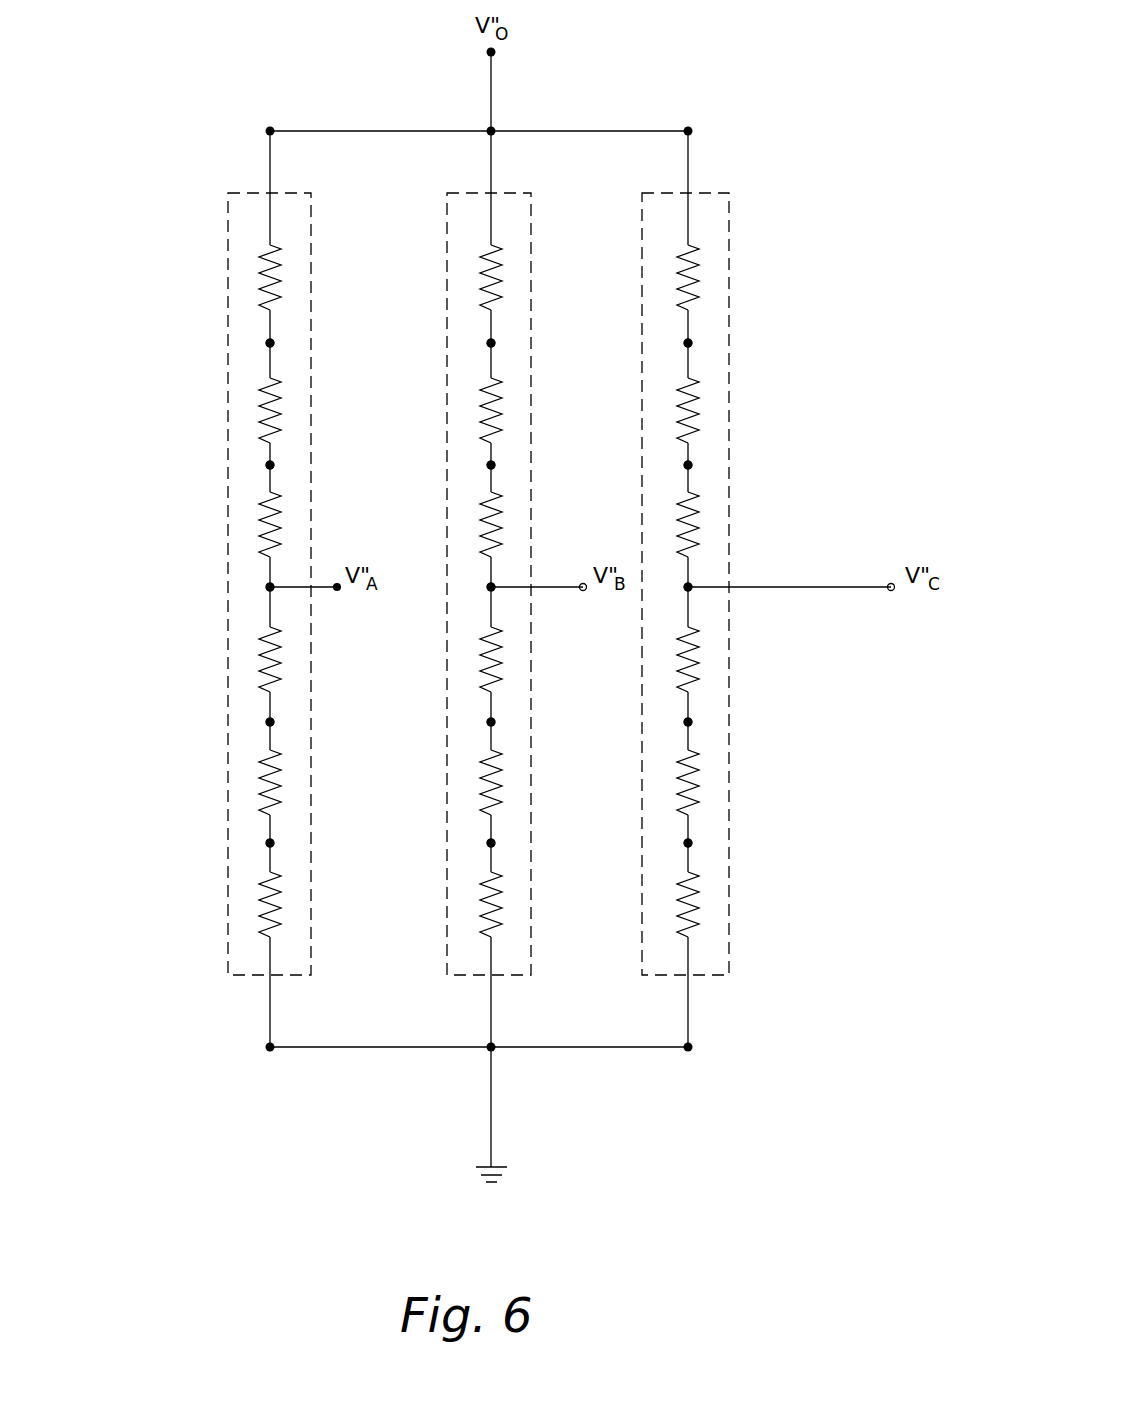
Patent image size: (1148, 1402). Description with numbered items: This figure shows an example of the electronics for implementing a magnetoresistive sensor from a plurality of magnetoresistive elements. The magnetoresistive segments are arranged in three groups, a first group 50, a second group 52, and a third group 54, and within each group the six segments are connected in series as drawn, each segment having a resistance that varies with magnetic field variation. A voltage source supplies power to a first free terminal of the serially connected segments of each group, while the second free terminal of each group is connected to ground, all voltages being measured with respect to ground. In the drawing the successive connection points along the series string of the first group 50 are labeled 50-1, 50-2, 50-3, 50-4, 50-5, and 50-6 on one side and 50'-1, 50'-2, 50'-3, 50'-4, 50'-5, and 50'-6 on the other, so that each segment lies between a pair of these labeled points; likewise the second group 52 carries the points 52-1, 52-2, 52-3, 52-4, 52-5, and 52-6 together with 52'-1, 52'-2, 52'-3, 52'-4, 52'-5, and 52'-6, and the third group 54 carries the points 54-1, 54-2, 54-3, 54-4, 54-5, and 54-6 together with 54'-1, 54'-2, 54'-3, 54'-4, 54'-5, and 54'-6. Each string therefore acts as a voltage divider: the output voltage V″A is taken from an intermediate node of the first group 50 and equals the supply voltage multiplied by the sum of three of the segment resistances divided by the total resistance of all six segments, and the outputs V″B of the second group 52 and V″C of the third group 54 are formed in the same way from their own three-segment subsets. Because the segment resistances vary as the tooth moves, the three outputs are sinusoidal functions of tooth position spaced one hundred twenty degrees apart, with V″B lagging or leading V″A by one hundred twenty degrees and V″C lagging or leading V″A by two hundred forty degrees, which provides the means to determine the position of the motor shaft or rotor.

The first group 50 is at (251, 589).
The second group 52 is at (480, 589).
The third group 54 is at (741, 589).
The first terminal of magnetoresistor MRa1 50-1 is at (270, 843).
The first terminal of magnetoresistor MRa2 50-2 is at (270, 722).
The first terminal of magnetoresistor MRa3 50-3 is at (270, 587).
The first terminal of magnetoresistor MRa4 50-4 is at (270, 465).
The first terminal of magnetoresistor MRa5 50-5 is at (270, 343).
The first terminal of magnetoresistor MRa6 50-6 is at (270, 131).
The second terminal of magnetoresistor MRa1 50'-1 is at (202, 1067).
The second terminal of magnetoresistor MRa2 50'-2 is at (192, 829).
The second terminal of magnetoresistor MRa3 50'-3 is at (192, 706).
The second terminal of magnetoresistor MRa4 50'-4 is at (191, 576).
The second terminal of magnetoresistor MRa5 50'-5 is at (192, 465).
The second terminal of magnetoresistor MRa6 50'-6 is at (192, 337).
The first terminal of magnetoresistor MRb3 52-1 is at (491, 843).
The first terminal of magnetoresistor MRb4 52-2 is at (491, 722).
The first terminal of magnetoresistor MRb5 52-3 is at (491, 587).
The first terminal of magnetoresistor MRb6 52-4 is at (491, 465).
The first terminal of magnetoresistor MRb1 52-5 is at (491, 343).
The first terminal of magnetoresistor MRb2 52-6 is at (491, 131).
The second terminal of magnetoresistor MRb3 52'-1 is at (434, 1077).
The second terminal of magnetoresistor MRb4 52'-2 is at (435, 829).
The second terminal of magnetoresistor MRb5 52'-3 is at (435, 705).
The second terminal of magnetoresistor MRb6 52'-4 is at (432, 602).
The second terminal of magnetoresistor MRb1 52'-5 is at (435, 465).
The second terminal of magnetoresistor MRb2 52'-6 is at (435, 337).
The first terminal of magnetoresistor MRc5 54-1 is at (688, 843).
The first terminal of magnetoresistor MRc6 54-2 is at (688, 722).
The first terminal of magnetoresistor MRc1 54-3 is at (688, 587).
The first terminal of magnetoresistor MRc2 54-4 is at (688, 465).
The first terminal of magnetoresistor MRc3 54-5 is at (688, 343).
The first terminal of magnetoresistor MRc4 54-6 is at (688, 131).
The second terminal of magnetoresistor MRc5 54'-1 is at (748, 1070).
The second terminal of magnetoresistor MRc6 54'-2 is at (760, 829).
The second terminal of magnetoresistor MRc1 54'-3 is at (760, 705).
The second terminal of magnetoresistor MRc2 54'-4 is at (778, 600).
The second terminal of magnetoresistor MRc3 54'-5 is at (760, 465).
The second terminal of magnetoresistor MRc4 54'-6 is at (760, 338).